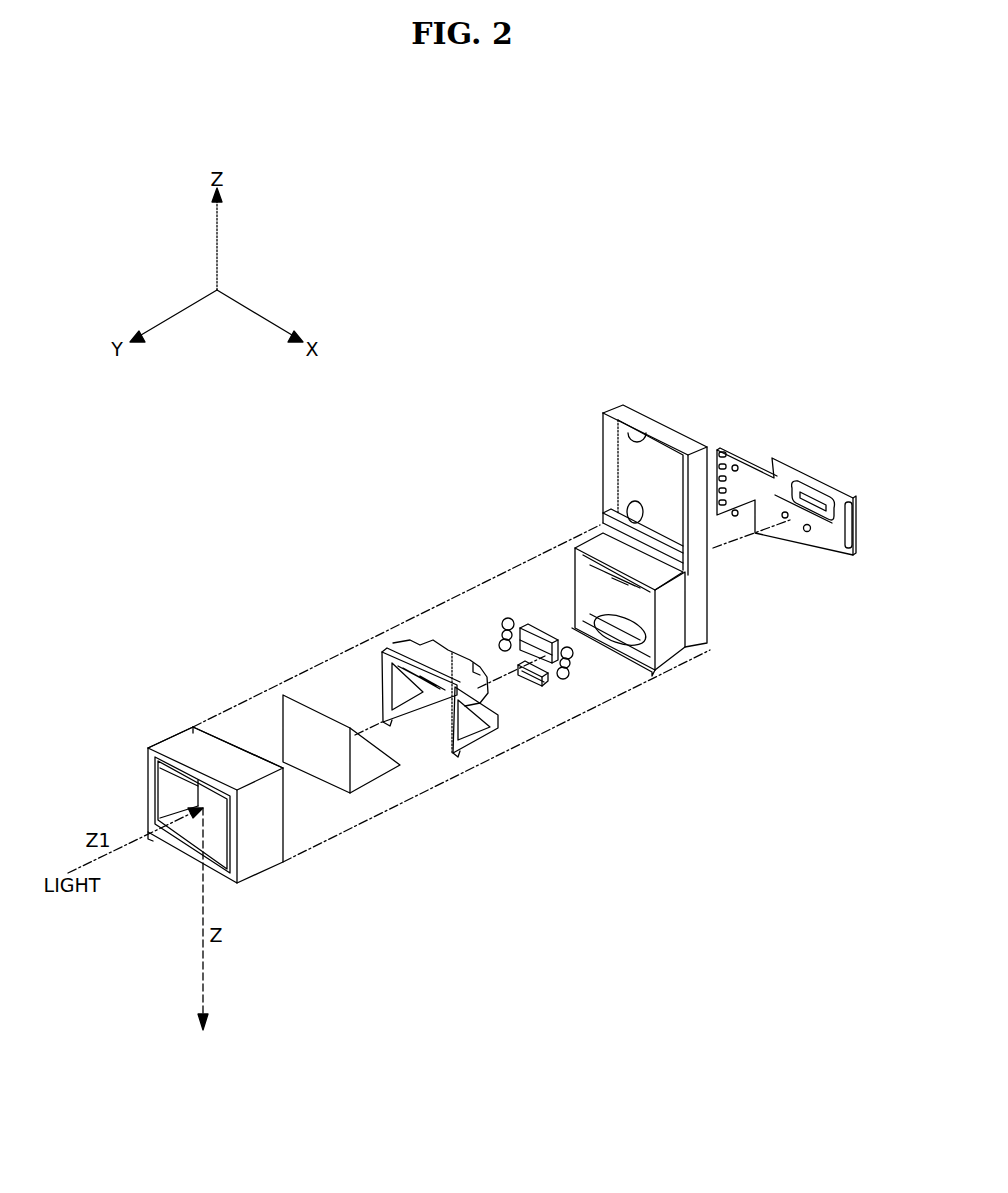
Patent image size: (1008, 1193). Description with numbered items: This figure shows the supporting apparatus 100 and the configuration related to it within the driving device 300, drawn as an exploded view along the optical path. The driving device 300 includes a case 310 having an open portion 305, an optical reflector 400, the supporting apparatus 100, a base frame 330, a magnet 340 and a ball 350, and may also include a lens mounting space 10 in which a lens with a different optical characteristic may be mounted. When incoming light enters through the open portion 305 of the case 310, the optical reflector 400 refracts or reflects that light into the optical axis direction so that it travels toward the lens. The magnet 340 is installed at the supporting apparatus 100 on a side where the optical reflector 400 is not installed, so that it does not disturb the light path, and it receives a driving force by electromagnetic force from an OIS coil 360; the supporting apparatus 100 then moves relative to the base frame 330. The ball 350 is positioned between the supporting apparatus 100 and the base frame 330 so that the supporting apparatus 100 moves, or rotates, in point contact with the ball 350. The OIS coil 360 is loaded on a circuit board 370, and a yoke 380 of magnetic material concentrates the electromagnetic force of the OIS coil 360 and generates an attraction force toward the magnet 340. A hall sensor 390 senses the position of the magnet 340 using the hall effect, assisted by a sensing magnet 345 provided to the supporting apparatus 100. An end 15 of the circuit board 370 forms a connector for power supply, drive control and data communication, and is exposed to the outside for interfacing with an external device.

The driving device 300 is at (332, 460).
The case 310 is at (172, 735).
The open portion 305 is at (165, 790).
The optical reflector 400 is at (290, 718).
The supporting apparatus 100 is at (382, 645).
The ball 350 is at (502, 628).
The magnet 340 is at (530, 620).
The sensing magnet 345 is at (533, 672).
The base frame 330 is at (680, 640).
The lens mounting space 10 is at (633, 465).
The circuit board 370 is at (762, 478).
The end of the circuit board 15 is at (722, 440).
The yoke 380 is at (850, 492).
The hall sensor 390 is at (807, 531).
The OIS coil 360 is at (827, 538).